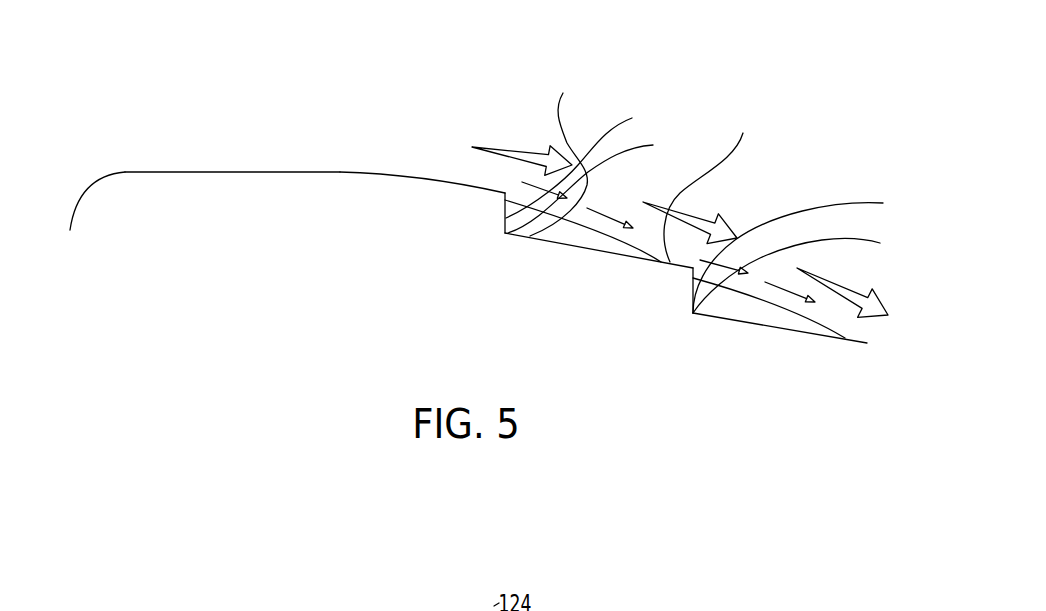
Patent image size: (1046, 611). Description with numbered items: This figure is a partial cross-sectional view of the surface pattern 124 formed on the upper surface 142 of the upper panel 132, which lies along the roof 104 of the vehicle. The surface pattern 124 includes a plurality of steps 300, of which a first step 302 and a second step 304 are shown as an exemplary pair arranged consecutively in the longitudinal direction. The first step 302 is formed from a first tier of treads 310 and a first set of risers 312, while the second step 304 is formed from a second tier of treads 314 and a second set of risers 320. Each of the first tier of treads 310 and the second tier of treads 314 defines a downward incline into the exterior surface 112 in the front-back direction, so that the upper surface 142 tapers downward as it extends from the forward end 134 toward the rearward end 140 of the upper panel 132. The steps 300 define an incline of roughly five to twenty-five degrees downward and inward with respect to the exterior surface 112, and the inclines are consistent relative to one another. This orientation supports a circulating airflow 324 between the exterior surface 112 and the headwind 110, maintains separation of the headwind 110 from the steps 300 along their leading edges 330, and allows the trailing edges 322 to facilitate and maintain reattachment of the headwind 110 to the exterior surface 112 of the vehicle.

The roof 104 is at (172, 67).
The headwind 110 is at (558, 152).
The exterior surface 112 is at (157, 172).
The surface pattern 124 is at (518, 75).
The upper panel 132 is at (208, 172).
The forward end 134 is at (89, 217).
The rearward end 140 is at (867, 343).
The upper surface 142 is at (180, 172).
The plurality of steps 300 is at (675, 90).
The first step 302 is at (485, 202).
The second step 304 is at (683, 277).
The first tier of treads 310 is at (425, 182).
The first set of risers 312 is at (588, 160).
The second tier of treads 314 is at (710, 185).
The second set of risers 320 is at (805, 254).
The trailing edges 322 is at (506, 195).
The circulating airflow 324 is at (568, 235).
The leading edges 330 is at (713, 222).